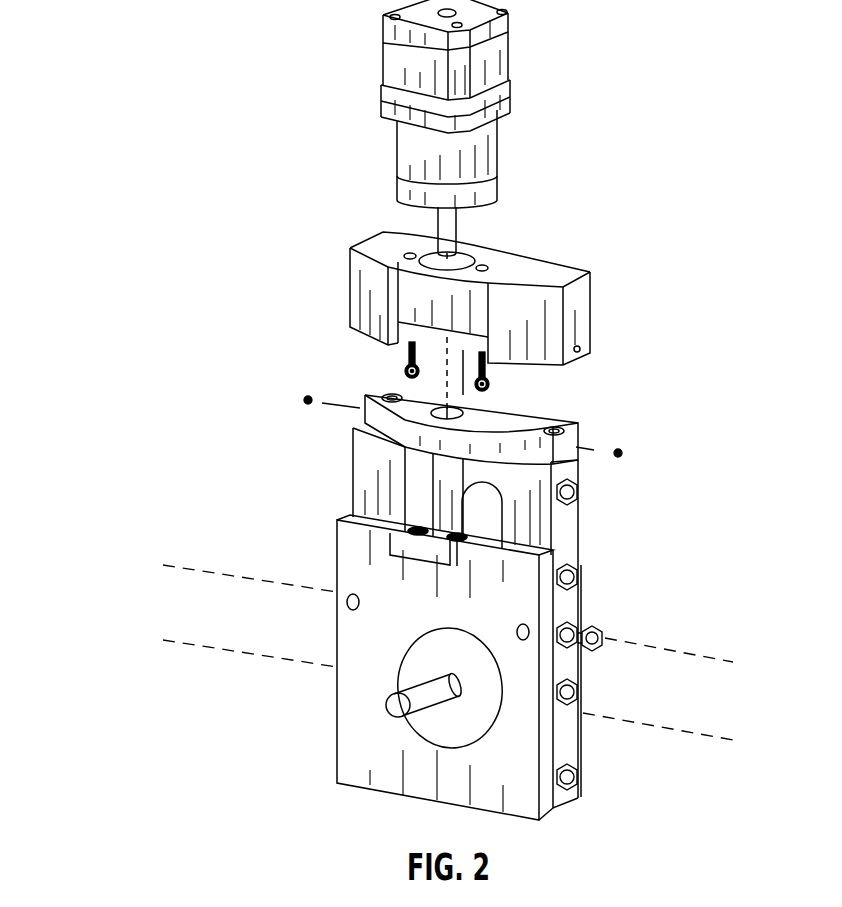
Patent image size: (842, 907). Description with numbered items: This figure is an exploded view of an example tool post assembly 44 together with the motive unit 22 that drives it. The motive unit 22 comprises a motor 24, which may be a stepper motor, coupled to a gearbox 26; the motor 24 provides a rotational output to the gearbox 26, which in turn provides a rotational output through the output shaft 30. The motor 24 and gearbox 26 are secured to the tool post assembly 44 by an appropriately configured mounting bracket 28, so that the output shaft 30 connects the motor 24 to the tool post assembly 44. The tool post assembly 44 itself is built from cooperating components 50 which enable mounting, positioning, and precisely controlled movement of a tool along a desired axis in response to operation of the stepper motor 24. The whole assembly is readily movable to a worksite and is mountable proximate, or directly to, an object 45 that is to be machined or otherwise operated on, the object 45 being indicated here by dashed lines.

The motive unit 22 is at (572, 73).
The motor 24 is at (385, 60).
The gearbox 26 is at (395, 150).
The mounting bracket 28 is at (350, 287).
The output shaft 30 is at (457, 240).
The tool post assembly 44 is at (600, 430).
The object 45 is at (663, 647).
The cooperating components 50 is at (352, 452).